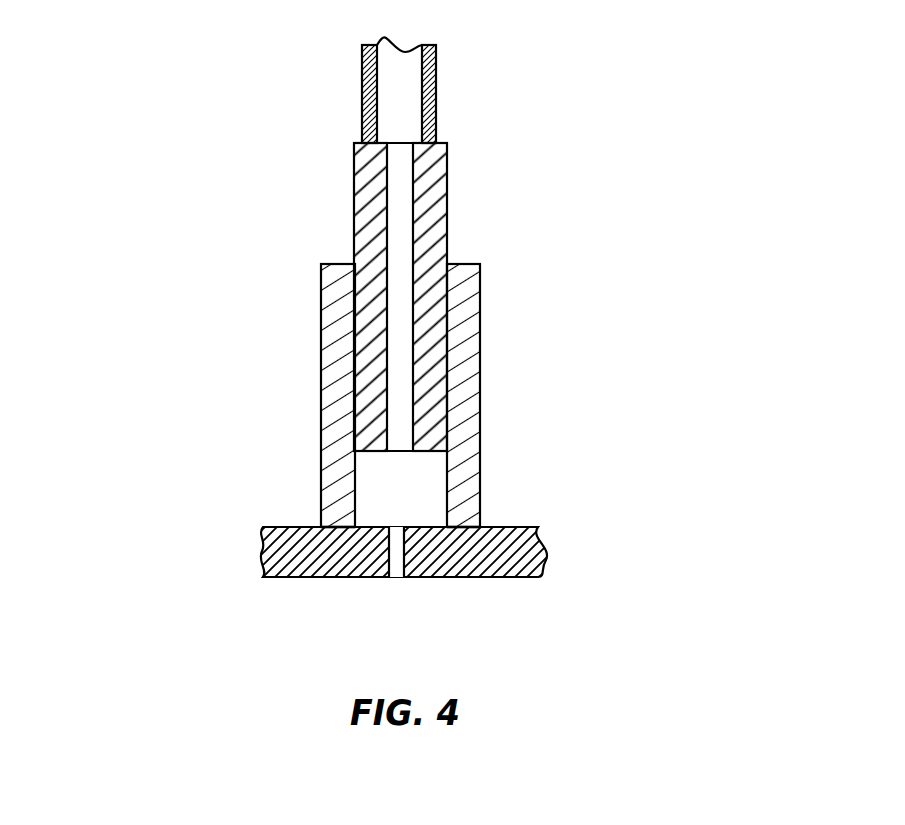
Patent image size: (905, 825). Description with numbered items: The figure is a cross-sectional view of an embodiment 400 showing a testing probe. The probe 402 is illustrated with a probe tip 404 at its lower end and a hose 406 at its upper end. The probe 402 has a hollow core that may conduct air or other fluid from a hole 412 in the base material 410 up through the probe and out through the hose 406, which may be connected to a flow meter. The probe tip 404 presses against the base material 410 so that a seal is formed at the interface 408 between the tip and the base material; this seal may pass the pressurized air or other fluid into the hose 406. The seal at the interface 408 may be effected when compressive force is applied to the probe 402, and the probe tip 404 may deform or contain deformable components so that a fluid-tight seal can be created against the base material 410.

The testing probe embodiment 400 is at (367, 265).
The probe 402 is at (448, 220).
The probe tip 404 is at (480, 470).
The hose 406 is at (437, 88).
The interface 408 is at (338, 523).
The base material 410 is at (505, 527).
The hole 412 is at (397, 565).